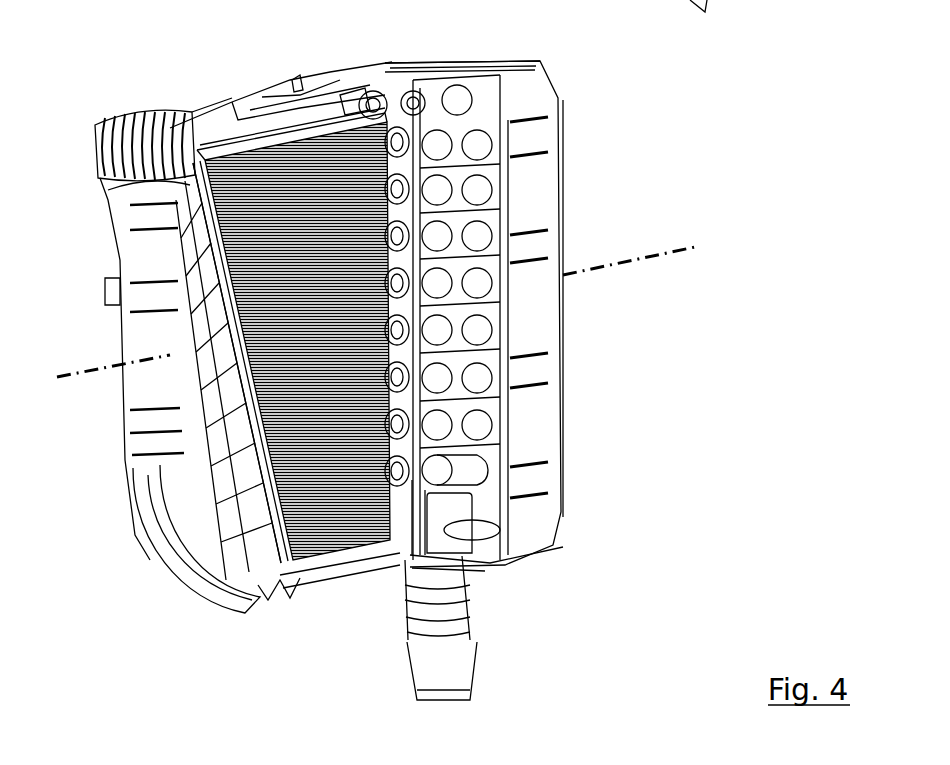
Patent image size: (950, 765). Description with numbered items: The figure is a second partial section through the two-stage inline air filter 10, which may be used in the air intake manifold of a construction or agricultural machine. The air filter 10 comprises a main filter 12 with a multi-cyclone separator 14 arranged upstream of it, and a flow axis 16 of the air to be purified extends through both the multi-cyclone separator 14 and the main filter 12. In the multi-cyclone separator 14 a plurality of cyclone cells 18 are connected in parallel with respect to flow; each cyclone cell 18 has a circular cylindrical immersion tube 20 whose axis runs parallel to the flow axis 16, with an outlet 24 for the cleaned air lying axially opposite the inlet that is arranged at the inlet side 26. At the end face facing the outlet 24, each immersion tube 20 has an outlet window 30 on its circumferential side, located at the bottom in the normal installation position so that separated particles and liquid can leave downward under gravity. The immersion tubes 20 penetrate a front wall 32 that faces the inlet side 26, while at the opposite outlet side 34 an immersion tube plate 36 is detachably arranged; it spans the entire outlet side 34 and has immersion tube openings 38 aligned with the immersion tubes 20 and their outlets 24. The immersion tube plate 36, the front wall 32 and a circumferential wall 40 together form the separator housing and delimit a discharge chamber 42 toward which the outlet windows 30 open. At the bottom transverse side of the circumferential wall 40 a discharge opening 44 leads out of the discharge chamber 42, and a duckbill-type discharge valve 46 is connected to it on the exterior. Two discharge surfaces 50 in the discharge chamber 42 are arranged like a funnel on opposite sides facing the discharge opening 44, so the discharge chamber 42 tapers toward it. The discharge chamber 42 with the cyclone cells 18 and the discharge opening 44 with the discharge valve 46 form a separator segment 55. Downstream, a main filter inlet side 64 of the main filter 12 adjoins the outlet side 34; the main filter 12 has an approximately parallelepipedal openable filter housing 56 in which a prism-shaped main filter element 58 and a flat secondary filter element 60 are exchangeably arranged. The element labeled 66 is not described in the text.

The air filter 10 is at (88, 62).
The main filter 12 is at (249, 86).
The multi-cyclone separator 14 is at (518, 60).
The flow axis 16 is at (85, 372).
The cyclone cell 18 is at (484, 232).
The immersion tube 20 is at (478, 188).
The outlet 24 is at (478, 380).
The inlet side 26 is at (597, 335).
The outlet window 30 is at (455, 122).
The front wall 32 is at (495, 472).
The outlet side 34 is at (205, 672).
The immersion tube plate 36 is at (375, 672).
The immersion tube opening 38 is at (412, 515).
The circumferential wall 40 is at (461, 62).
The discharge chamber 42 is at (480, 507).
The discharge opening 44 is at (440, 560).
The discharge valve 46 is at (438, 668).
The discharge surface 50 is at (445, 530).
The separator segment 55 is at (484, 293).
The filter housing 56 is at (165, 118).
The main filter element 58 is at (232, 155).
The secondary filter element 60 is at (205, 390).
The main filter inlet side 64 is at (353, 115).
The bottom cap 66 is at (182, 570).